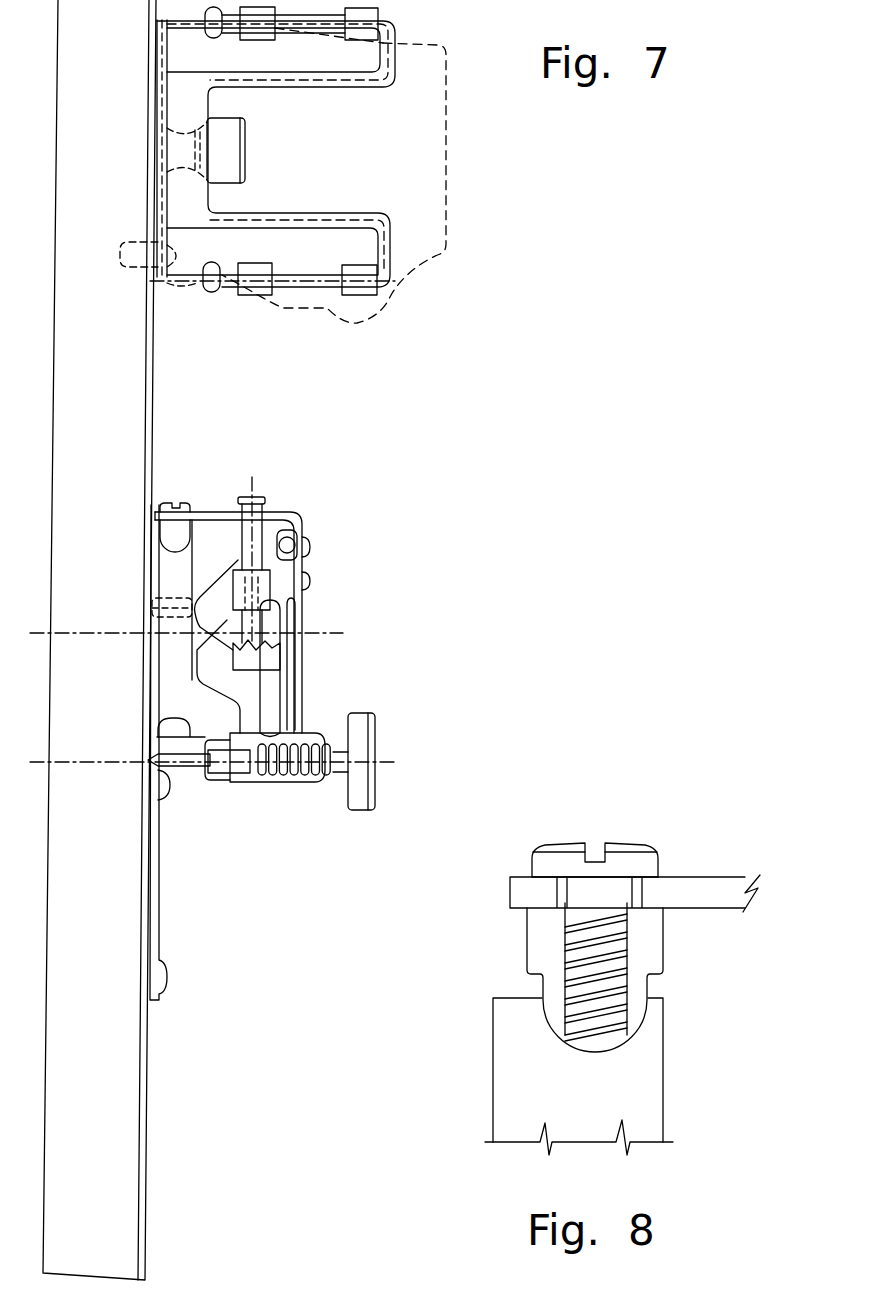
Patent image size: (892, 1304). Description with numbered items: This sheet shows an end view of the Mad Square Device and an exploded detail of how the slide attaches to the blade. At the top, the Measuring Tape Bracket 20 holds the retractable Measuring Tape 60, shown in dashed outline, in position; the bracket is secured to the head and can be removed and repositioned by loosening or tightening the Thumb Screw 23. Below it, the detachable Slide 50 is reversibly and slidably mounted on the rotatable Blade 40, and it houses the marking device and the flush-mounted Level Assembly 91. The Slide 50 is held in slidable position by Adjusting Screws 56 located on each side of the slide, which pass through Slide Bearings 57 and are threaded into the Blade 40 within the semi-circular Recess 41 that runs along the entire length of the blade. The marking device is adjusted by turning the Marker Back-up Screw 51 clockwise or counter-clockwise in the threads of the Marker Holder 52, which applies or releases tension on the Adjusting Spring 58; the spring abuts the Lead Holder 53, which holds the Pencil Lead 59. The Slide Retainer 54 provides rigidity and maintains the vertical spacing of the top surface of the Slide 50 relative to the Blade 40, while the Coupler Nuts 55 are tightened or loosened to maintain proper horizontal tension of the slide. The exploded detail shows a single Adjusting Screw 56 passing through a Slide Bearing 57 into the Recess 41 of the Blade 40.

In FIG. 7, the Measuring Tape Bracket 20 is at (383, 53).
In FIG. 7, the Thumb Screw 23 is at (246, 148).
In FIG. 7, the Measuring Tape 60 is at (443, 252).
In FIG. 7, the Slide 50 is at (303, 610).
In FIG. 8, the Slide 50 is at (510, 875).
In FIG. 7, the Slide Adjusting Screw 56 is at (168, 500).
In FIG. 8, the Slide Adjusting Screw 56 is at (640, 842).
In FIG. 7, the Recess 41 is at (177, 538).
In FIG. 8, the Recess 41 is at (637, 1040).
In FIG. 7, the Level Assembly 91 is at (295, 540).
In FIG. 7, the Coupler Nut 55 is at (273, 575).
In FIG. 7, the Slide Retainer 54 is at (232, 697).
In FIG. 7, the Marker Holder 52 is at (277, 793).
In FIG. 7, the Lead Holder 53 is at (190, 770).
In FIG. 7, the Pencil Lead 59 is at (170, 768).
In FIG. 7, the Adjusting Spring 58 is at (303, 775).
In FIG. 7, the Marker Back-up Screw 51 is at (368, 813).
In FIG. 8, the Slide Bearing 57 is at (527, 935).
In FIG. 8, the Blade 40 is at (493, 1027).